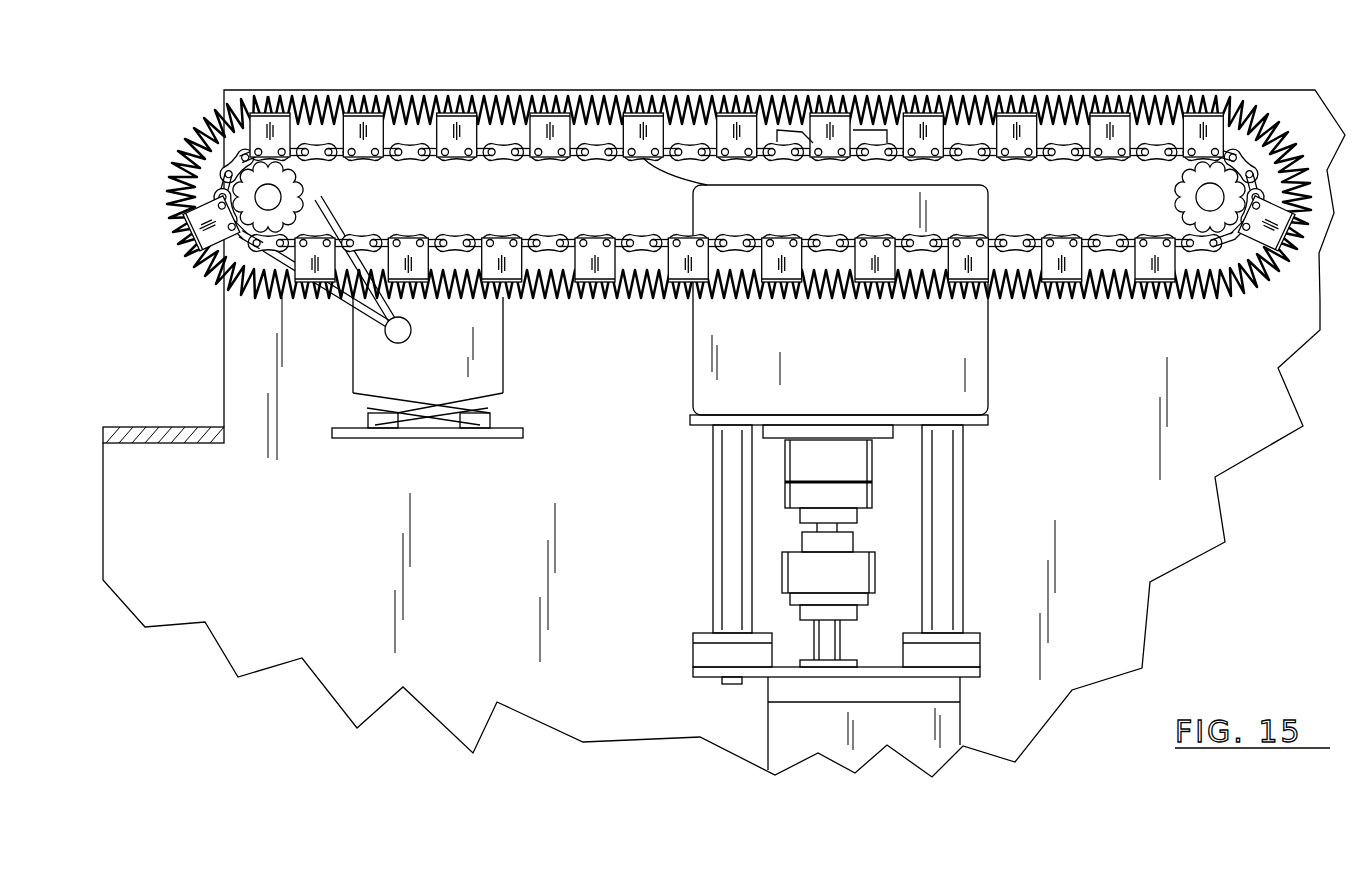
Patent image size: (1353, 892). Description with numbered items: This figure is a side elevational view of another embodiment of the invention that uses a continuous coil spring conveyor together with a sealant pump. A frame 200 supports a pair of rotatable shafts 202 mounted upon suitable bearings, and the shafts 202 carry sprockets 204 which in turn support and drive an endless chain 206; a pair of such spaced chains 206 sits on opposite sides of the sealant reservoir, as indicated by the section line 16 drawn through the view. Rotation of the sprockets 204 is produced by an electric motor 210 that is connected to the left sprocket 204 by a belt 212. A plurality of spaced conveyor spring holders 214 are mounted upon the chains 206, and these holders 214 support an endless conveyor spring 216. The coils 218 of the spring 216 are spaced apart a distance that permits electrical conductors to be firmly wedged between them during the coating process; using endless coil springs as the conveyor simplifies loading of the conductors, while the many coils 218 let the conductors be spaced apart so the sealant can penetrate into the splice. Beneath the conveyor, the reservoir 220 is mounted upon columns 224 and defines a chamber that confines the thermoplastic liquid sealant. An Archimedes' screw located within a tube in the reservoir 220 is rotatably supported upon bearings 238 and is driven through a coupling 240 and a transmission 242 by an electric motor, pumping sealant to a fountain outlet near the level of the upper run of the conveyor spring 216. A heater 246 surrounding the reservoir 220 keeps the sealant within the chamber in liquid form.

The section line 16- 16 is at (850, 58).
The frame 200 is at (176, 445).
The rotatable shafts 202 is at (277, 193).
The sprockets 204 is at (292, 224).
The chain 206 is at (590, 160).
The electric motor 210 is at (503, 338).
The belt 212 is at (342, 314).
The conveyor spring holders 214 is at (910, 160).
The endless conveyor spring 216 is at (422, 95).
The coils 218 is at (650, 97).
The reservoir 220 is at (691, 357).
The columns 224 is at (715, 595).
The bearings 238 is at (847, 480).
The coupling 240 is at (847, 587).
The transmission 242 is at (917, 744).
The heater 246 is at (897, 390).